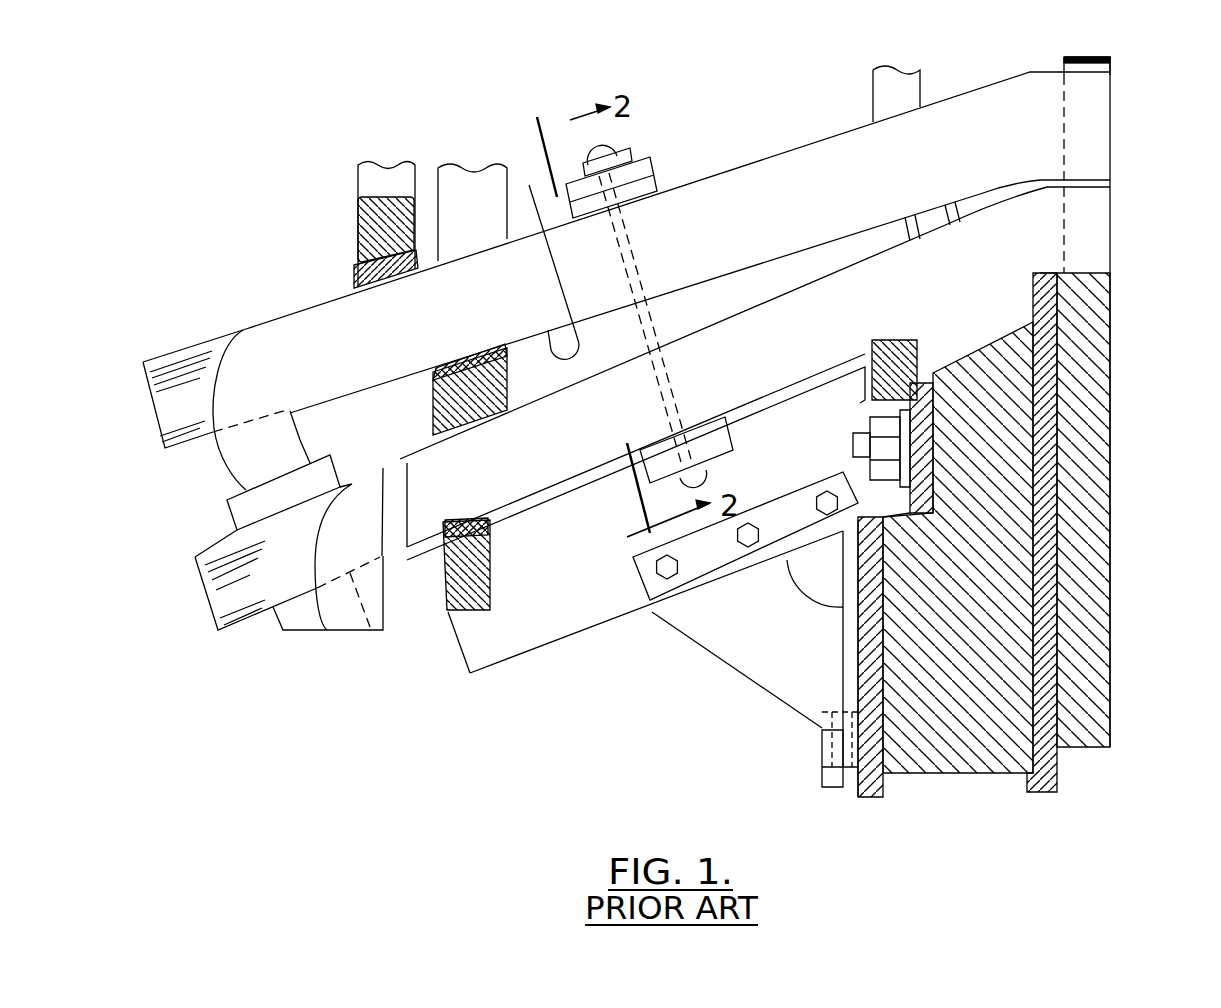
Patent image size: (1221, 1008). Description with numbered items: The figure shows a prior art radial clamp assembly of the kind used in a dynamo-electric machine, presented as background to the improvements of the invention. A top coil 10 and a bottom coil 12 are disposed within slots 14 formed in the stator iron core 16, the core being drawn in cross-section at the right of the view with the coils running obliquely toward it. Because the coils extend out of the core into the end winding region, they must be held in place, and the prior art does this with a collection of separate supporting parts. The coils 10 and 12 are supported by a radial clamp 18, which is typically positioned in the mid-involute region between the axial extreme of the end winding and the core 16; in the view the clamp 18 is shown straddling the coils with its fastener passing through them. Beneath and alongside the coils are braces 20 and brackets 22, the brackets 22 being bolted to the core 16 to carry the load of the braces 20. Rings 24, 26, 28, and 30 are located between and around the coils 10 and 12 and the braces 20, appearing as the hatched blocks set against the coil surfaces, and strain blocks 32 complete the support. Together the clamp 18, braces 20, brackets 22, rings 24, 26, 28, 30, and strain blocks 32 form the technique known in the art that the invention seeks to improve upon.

The top coil 10 is at (758, 162).
The bottom coil 12 is at (740, 312).
The slots 14 is at (1087, 273).
The stator iron core 16 is at (950, 773).
The radial clamp 18 is at (640, 153).
The braces 20 is at (557, 637).
The brackets 22 is at (728, 664).
The ring 24 is at (437, 412).
The ring 26 is at (443, 583).
The ring 28 is at (925, 345).
The ring 30 is at (358, 232).
The strain blocks 32 is at (529, 185).